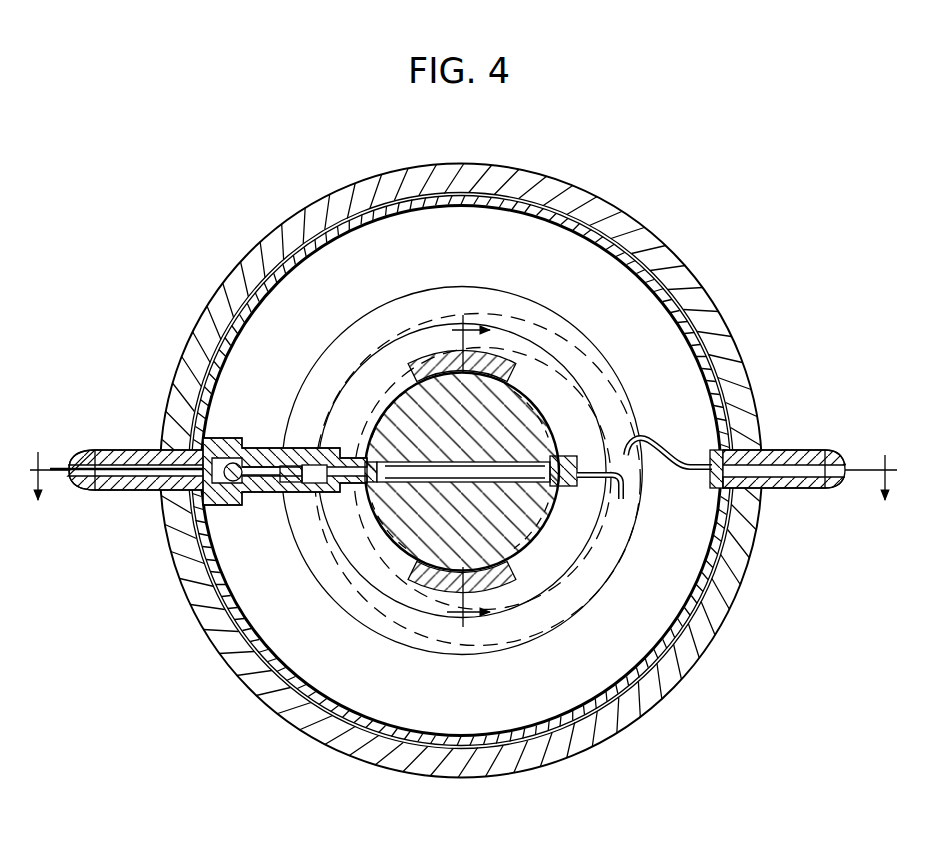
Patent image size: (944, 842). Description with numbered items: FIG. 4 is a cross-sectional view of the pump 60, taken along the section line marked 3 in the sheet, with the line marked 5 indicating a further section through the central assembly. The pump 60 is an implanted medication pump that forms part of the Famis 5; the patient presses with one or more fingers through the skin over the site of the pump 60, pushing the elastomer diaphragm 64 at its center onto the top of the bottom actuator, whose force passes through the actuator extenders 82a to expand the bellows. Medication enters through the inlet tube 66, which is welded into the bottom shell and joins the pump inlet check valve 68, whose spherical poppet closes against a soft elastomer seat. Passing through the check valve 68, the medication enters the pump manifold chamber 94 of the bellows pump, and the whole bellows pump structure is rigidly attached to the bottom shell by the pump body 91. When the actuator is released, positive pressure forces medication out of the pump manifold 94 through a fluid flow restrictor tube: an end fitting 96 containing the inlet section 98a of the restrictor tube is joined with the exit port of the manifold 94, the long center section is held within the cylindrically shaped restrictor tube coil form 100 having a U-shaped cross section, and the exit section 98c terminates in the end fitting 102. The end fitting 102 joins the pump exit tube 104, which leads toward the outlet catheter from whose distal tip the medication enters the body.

The pump 60 is at (466, 471).
The elastomer diaphragm 64 is at (497, 471).
The inlet tube 66 is at (122, 491).
The pump inlet check valve 68 is at (252, 434).
The actuator extenders 82a is at (434, 432).
The pump body 91 is at (474, 472).
The pump manifold chamber 94 is at (455, 468).
The end fitting 96 is at (581, 455).
The inlet section of restrictor tube 98a is at (628, 498).
The exit section of restrictor tube 98c is at (644, 444).
The restrictor tube coil form 100 is at (461, 471).
The end fitting 102 is at (710, 478).
The pump exit tube 104 is at (806, 450).
The section line 3- 3 is at (461, 476).
The Famis 5 is at (468, 474).